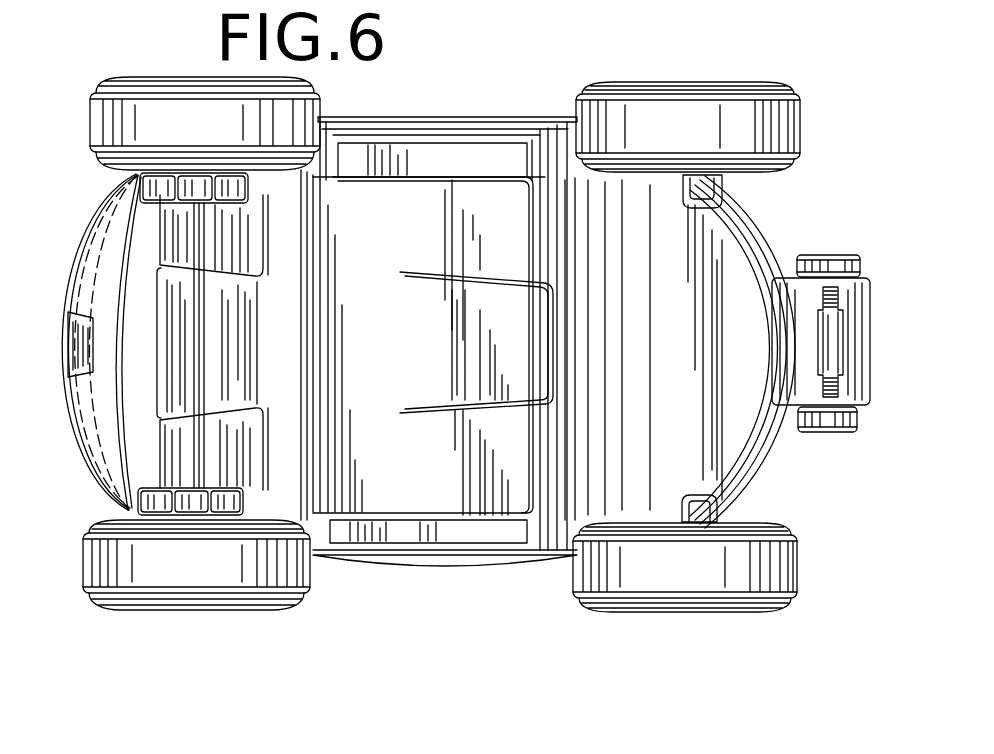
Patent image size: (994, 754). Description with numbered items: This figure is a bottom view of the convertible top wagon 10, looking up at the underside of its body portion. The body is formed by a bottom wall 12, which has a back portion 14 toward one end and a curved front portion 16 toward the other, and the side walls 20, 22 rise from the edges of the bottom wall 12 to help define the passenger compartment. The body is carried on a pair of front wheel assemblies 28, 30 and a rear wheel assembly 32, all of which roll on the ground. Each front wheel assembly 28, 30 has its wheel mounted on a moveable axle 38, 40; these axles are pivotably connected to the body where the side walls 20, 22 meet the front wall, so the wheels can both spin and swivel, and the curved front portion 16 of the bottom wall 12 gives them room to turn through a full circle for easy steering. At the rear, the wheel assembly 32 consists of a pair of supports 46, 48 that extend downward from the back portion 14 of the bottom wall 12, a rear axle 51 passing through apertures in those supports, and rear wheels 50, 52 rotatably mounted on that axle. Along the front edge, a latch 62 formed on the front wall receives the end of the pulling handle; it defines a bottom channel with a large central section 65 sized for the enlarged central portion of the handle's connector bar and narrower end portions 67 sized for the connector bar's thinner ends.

The convertible top wagon 10 is at (449, 86).
The bottom wall 12 is at (414, 333).
The back portion 14 is at (232, 308).
The curved front portion 16 is at (617, 404).
The side wall 20 is at (497, 118).
The side wall 22 is at (432, 568).
The front wheel assembly 28 is at (688, 70).
The front wheel assembly 30 is at (716, 612).
The rear wheel assembly 32 is at (120, 513).
The moveable axle 38 is at (714, 209).
The moveable axle 40 is at (698, 492).
The support 46 is at (138, 184).
The support 48 is at (157, 497).
The rear wheel 50 is at (108, 115).
The rear axle 51 is at (205, 363).
The rear wheel 52 is at (113, 562).
The latch 62 is at (868, 259).
The large central section 65 is at (842, 330).
The narrower end portion 67 is at (833, 290).